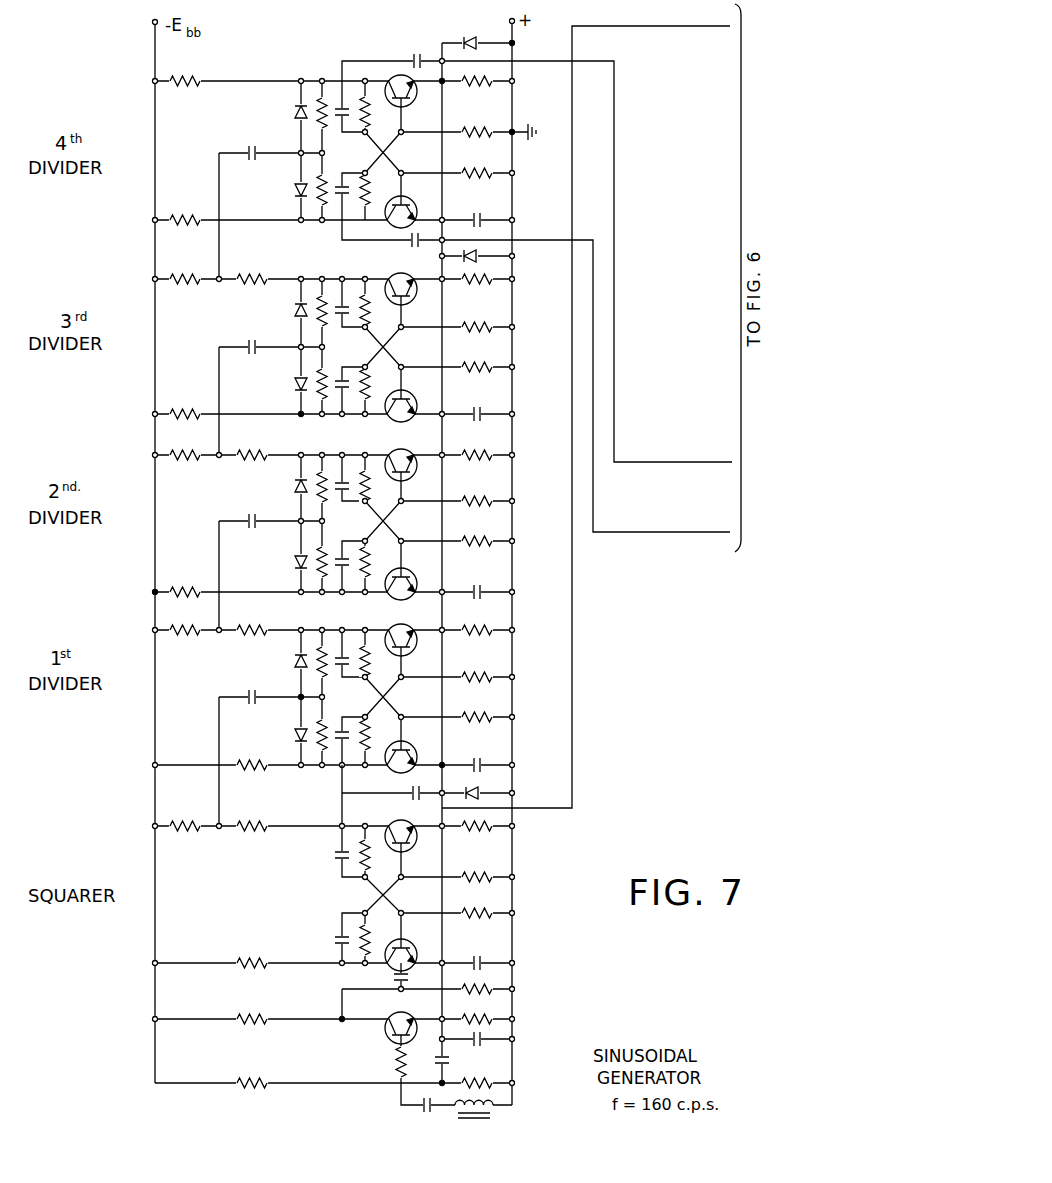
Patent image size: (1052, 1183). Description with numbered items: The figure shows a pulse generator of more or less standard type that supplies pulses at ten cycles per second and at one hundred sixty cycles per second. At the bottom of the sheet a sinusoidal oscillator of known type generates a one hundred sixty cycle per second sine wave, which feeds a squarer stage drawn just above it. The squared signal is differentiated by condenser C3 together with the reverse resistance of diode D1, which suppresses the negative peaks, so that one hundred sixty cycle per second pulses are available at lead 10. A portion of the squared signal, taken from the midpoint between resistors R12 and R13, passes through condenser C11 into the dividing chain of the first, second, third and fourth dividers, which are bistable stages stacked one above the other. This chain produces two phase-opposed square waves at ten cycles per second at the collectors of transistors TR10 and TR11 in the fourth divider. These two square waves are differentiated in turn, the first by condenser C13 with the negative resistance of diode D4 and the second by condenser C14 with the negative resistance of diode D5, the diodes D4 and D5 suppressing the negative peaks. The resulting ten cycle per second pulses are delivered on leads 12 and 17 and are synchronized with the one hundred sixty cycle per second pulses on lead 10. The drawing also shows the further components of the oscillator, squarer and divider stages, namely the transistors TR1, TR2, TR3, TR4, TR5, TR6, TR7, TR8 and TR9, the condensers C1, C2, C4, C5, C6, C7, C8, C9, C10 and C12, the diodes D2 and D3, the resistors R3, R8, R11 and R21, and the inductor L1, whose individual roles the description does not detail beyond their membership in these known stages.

The lead 10 is at (716, 23).
The lead 12 is at (716, 460).
The lead 17 is at (716, 530).
The transistor TR1 is at (388, 1016).
The transistor TR2 is at (386, 968).
The transistor TR3 is at (388, 824).
The transistor TR4 is at (386, 770).
The transistor TR5 is at (412, 628).
The transistor TR6 is at (386, 596).
The transistor TR7 is at (412, 453).
The transistor TR8 is at (386, 418).
The transistor TR9 is at (386, 276).
The transistor TR10 is at (388, 228).
The transistor TR11 is at (390, 79).
The capacitor C1 is at (420, 1110).
The capacitor C2 is at (450, 1062).
The condenser C3 is at (479, 1046).
The capacitor C4 is at (411, 979).
The capacitor C5 is at (473, 957).
The capacitor C6 is at (334, 946).
The capacitor C7 is at (334, 857).
The capacitor C8 is at (417, 790).
The capacitor C9 is at (473, 760).
The capacitor C10 is at (338, 720).
The condenser C11 is at (246, 690).
The capacitor C12 is at (339, 648).
The condenser C13 is at (421, 243).
The condenser C14 is at (414, 51).
The diode D1 is at (475, 793).
The diode D2 is at (294, 734).
The diode D3 is at (294, 657).
The diode D4 is at (464, 259).
The diode D5 is at (470, 40).
The resistor R3 is at (394, 1061).
The resistor R8 is at (369, 938).
The resistor R11 is at (369, 856).
The resistor R12 is at (196, 812).
The resistor R13 is at (271, 812).
The resistor R21 is at (364, 658).
The inductor L1 is at (495, 1107).